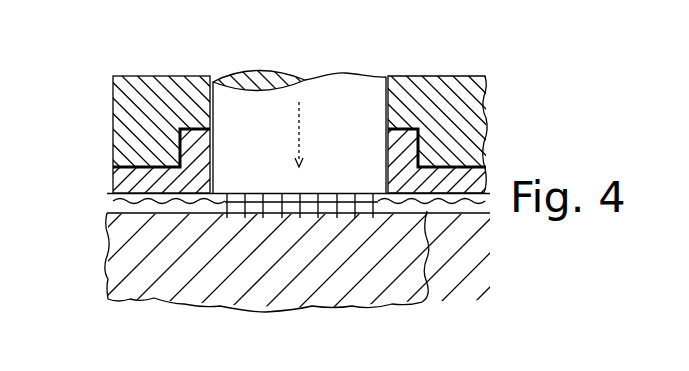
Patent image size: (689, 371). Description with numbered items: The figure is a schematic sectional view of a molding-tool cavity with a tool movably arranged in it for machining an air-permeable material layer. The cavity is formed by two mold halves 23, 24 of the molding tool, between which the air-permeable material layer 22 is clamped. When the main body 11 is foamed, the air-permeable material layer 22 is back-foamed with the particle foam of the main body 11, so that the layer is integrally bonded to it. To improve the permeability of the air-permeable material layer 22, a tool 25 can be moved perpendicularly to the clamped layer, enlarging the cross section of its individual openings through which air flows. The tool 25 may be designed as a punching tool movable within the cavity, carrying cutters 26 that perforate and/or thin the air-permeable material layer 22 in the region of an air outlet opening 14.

The main body 11 is at (135, 176).
The air outlet opening 14 is at (203, 150).
The air-permeable material layer 22 is at (118, 207).
The mold half 23 is at (108, 249).
The mold half 24 is at (135, 125).
The tool 25 is at (335, 93).
The cutters 26 is at (300, 204).